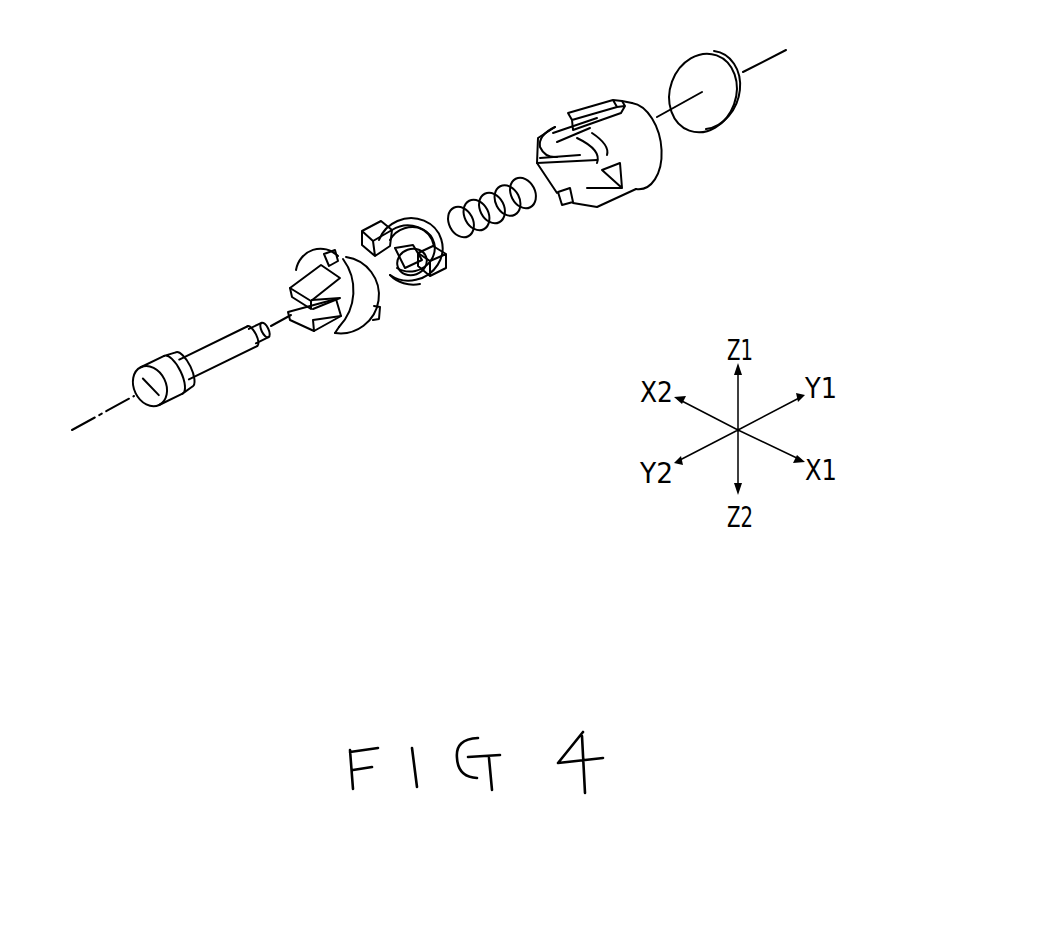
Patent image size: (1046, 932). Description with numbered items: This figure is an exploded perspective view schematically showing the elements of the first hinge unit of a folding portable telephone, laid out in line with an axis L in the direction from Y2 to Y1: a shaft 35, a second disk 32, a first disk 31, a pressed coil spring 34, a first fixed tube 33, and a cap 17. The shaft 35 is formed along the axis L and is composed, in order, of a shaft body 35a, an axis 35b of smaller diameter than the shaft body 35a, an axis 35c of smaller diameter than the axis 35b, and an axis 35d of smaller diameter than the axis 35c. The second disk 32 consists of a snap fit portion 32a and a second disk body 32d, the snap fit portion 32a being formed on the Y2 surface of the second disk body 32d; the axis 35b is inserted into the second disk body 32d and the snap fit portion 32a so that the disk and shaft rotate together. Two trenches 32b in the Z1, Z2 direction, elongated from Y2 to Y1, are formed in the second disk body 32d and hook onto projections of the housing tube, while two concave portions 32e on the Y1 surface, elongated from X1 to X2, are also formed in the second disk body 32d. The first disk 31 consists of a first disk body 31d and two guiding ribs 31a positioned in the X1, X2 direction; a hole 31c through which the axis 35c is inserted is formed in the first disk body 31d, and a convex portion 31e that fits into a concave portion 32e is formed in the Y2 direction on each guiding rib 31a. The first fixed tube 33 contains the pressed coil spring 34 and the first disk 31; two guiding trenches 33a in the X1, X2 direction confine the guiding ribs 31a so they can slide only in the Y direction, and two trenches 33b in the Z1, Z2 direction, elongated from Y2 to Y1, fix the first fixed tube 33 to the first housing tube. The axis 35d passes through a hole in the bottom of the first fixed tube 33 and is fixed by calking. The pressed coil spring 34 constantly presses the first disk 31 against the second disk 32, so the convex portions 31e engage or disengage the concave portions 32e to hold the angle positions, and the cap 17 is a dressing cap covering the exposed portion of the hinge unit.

The axis L is at (101, 410).
The cap 17 is at (749, 112).
The first disk 31 is at (430, 240).
The guiding ribs 31a is at (428, 282).
The hole 31c is at (400, 287).
The first disk body 31d is at (421, 220).
The convex portion 31e is at (362, 225).
The second disk 32 is at (344, 292).
The snap fit portion 32a is at (314, 338).
The trenches 32b is at (327, 250).
The second disk body 32d is at (360, 320).
The concave portions 32e is at (380, 310).
The first fixed tube 33 is at (590, 144).
The guiding trenches 33a is at (550, 117).
The trenches 33b is at (600, 100).
The pressed coil spring 34 is at (505, 226).
The shaft 35 is at (189, 368).
The shaft body 35a is at (154, 384).
The axis 35b is at (181, 371).
The axis 35c is at (218, 352).
The axis 35d is at (260, 332).